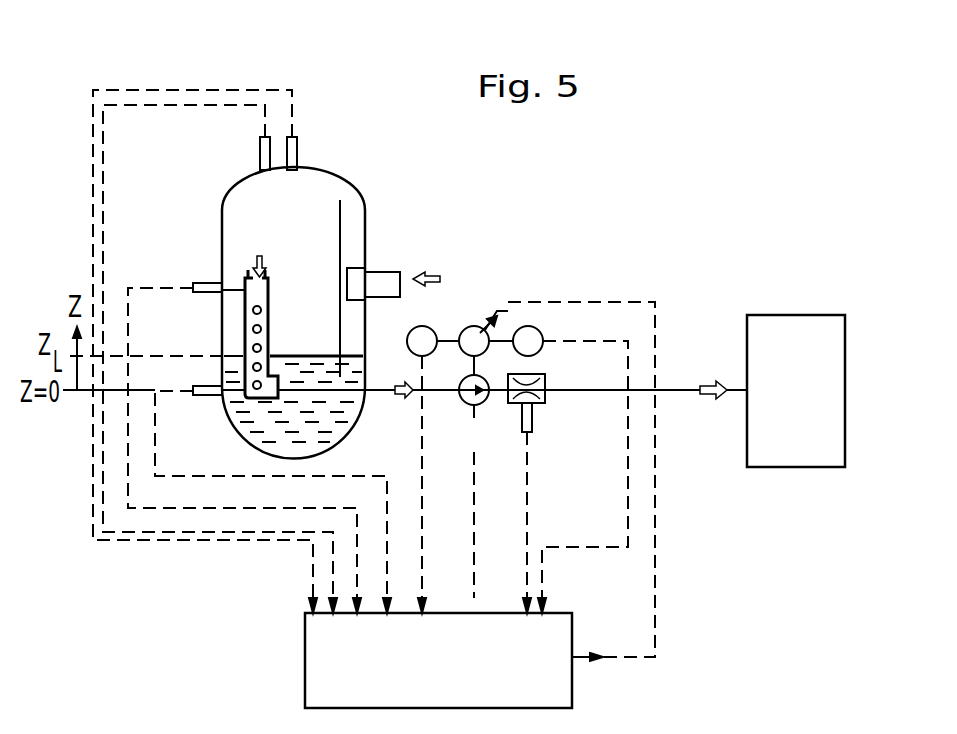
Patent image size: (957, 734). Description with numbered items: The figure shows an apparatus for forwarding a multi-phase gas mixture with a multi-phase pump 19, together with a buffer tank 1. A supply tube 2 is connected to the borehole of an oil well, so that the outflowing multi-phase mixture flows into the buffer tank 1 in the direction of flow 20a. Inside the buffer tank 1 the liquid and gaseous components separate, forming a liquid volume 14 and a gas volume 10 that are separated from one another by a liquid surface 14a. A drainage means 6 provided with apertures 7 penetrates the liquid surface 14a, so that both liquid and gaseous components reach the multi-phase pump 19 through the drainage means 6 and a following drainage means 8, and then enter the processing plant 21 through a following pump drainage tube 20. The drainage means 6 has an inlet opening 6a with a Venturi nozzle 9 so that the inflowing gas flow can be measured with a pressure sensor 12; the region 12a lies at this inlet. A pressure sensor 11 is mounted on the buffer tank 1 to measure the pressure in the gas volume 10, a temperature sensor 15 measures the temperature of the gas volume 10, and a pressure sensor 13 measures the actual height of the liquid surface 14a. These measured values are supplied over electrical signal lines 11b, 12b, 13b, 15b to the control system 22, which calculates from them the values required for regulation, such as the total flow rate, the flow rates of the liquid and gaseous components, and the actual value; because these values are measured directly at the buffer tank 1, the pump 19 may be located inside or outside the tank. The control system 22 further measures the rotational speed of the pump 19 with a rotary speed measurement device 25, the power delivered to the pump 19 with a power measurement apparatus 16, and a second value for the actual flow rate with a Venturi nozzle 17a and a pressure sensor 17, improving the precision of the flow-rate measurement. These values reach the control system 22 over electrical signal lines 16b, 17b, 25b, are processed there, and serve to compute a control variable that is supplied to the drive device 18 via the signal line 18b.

The buffer tank 1 is at (343, 178).
The supply tube 2 is at (381, 268).
The drainage means 6 is at (252, 378).
The inlet opening 6a is at (240, 260).
The apertures 7 is at (252, 329).
The following drainage means 8 is at (387, 393).
The Venturi nozzle 9 is at (256, 268).
The gas volume 10 is at (298, 197).
The pressure sensor 11 is at (260, 155).
The electrical signal line 11b is at (188, 103).
The pressure sensor 12 is at (196, 284).
The annular chamber 12a is at (221, 277).
The electrical signal line 12b is at (142, 509).
The pressure sensor 13 is at (205, 397).
The electrical signal line 13b is at (220, 478).
The liquid volume 14 is at (327, 428).
The liquid surface 14a is at (233, 346).
The temperature sensor 15 is at (294, 148).
The electrical signal line 15b is at (275, 89).
The power measurement apparatus 16 is at (529, 339).
The electrical signal line 16b is at (628, 492).
The pressure sensor 17 is at (533, 428).
The Venturi nozzle 17a is at (546, 393).
The electrical signal line 17b is at (528, 493).
The drive device 18 is at (478, 326).
The signal line 18b is at (638, 300).
The multi-phase pump 19 is at (474, 413).
The pump drainage tube 20 is at (678, 393).
The direction of flow 20a is at (436, 270).
The processing plant 21 is at (810, 402).
The control system 22 is at (450, 672).
The rotary speed measurement device 25 is at (423, 331).
The electrical signal line 25b is at (423, 503).